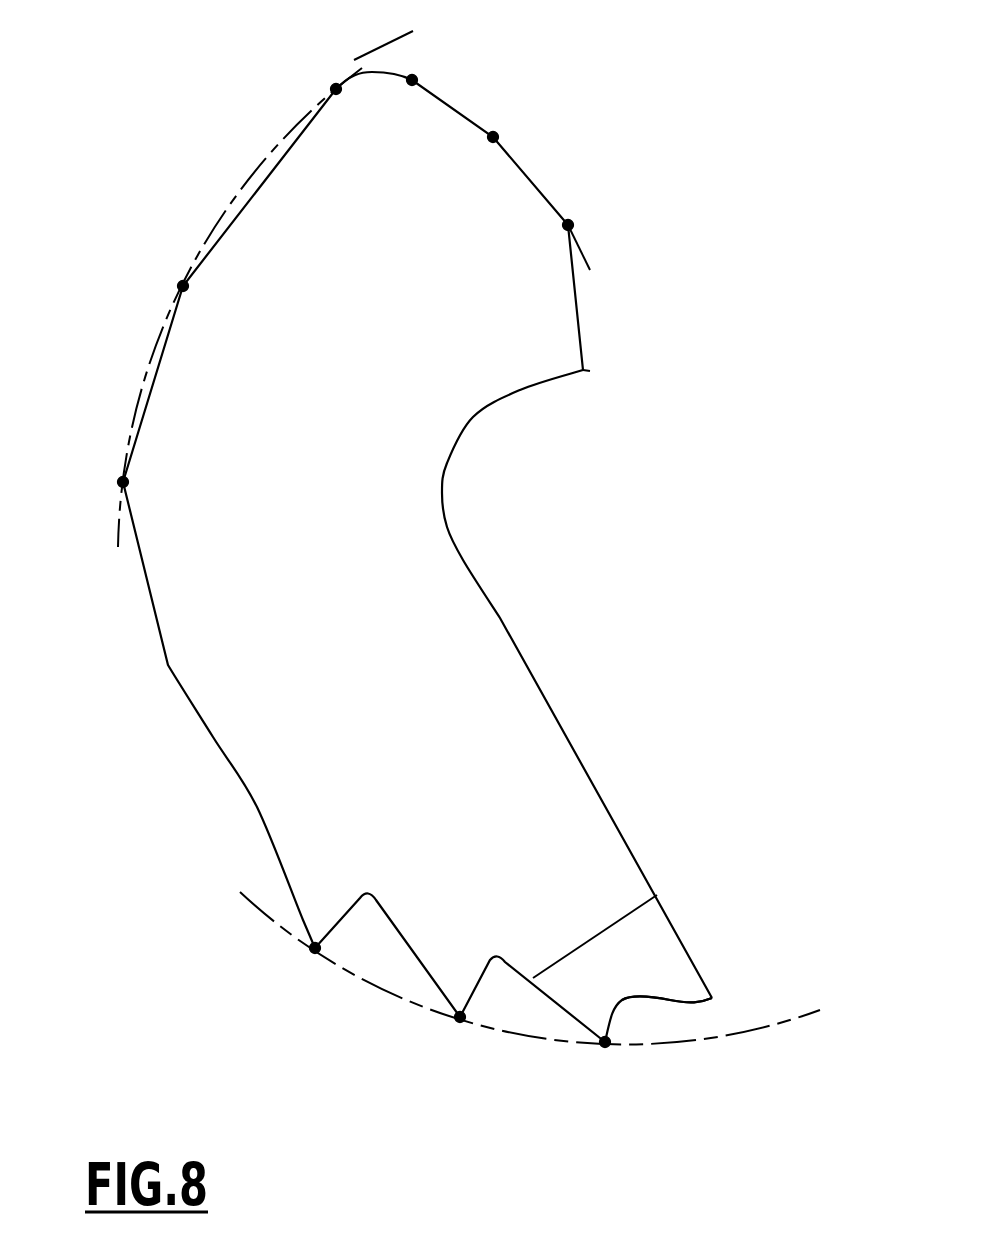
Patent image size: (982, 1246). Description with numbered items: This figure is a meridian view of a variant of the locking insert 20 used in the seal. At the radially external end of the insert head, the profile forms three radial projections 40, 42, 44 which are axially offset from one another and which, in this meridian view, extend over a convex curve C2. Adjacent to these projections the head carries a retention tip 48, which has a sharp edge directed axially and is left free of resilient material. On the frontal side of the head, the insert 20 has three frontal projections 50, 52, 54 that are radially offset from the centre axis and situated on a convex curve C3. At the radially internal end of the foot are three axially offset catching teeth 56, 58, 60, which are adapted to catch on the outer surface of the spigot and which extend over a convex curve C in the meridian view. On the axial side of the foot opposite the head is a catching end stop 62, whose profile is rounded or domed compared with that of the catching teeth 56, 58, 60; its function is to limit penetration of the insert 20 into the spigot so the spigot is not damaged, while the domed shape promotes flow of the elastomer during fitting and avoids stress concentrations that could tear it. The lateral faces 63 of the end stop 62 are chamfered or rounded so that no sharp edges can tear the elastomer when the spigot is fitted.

The locking insert 20 is at (485, 705).
The radial projection 40 is at (414, 79).
The radial projection 42 is at (496, 133).
The radial projection 44 is at (572, 226).
The retention tip 48 is at (586, 371).
The frontal projection 50 is at (334, 89).
The frontal projection 52 is at (180, 287).
The frontal projection 54 is at (121, 484).
The catching tooth 56 is at (311, 958).
The catching tooth 58 is at (454, 1026).
The catching tooth 60 is at (609, 1053).
The catching end stop 62 is at (718, 1005).
The lateral faces 63 is at (638, 969).
The convex curve C is at (545, 968).
The convex curve C2 is at (594, 269).
The convex curve C3 is at (227, 334).